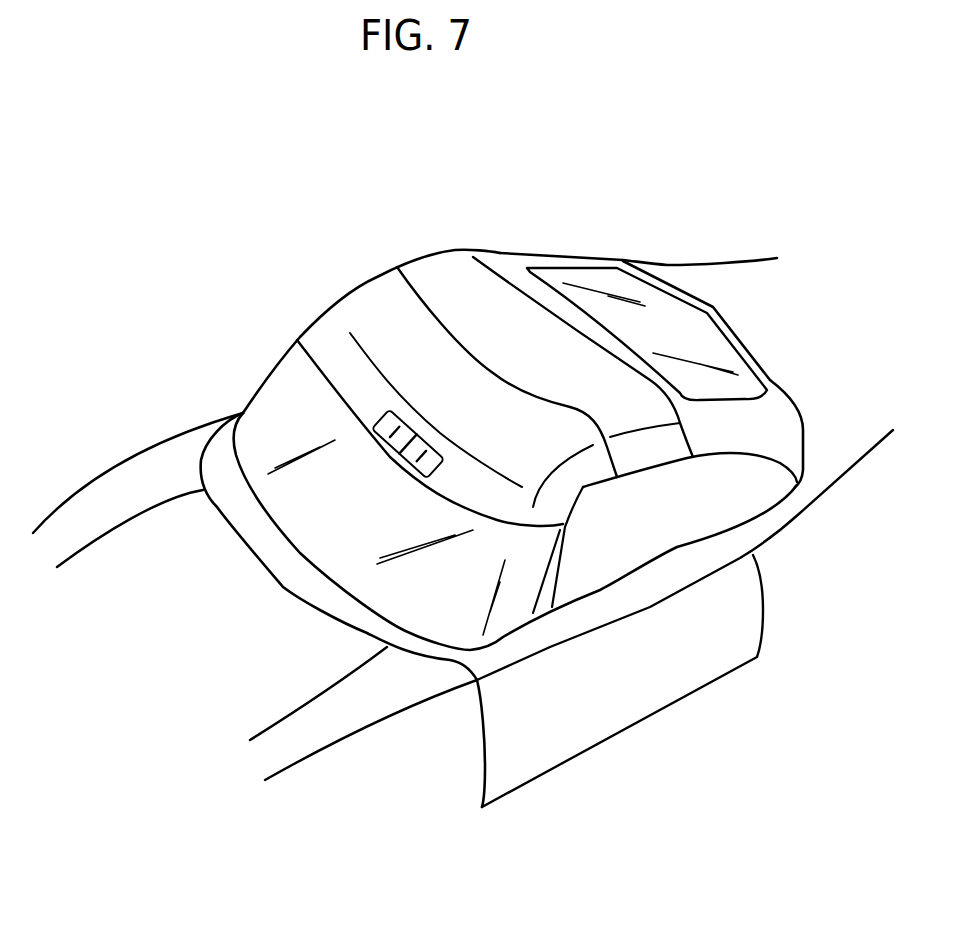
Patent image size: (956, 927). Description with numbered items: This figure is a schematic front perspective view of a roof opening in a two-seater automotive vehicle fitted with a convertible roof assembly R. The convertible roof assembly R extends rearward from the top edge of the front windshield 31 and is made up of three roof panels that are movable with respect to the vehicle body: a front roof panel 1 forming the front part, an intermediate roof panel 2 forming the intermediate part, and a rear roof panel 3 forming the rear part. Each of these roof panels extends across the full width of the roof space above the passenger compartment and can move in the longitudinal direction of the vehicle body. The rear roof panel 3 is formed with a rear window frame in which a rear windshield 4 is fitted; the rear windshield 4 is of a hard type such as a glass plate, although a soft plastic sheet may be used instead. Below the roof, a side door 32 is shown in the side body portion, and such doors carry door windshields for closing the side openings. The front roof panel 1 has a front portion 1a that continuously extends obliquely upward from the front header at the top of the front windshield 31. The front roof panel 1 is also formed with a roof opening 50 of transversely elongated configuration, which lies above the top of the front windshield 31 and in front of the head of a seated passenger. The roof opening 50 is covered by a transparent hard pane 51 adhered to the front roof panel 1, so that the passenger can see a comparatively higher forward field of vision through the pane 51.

The convertible roof assembly R is at (318, 216).
The front roof panel 1 is at (378, 278).
The front portion 1a is at (342, 370).
The intermediate roof panel 2 is at (457, 280).
The rear roof panel 3 is at (523, 268).
The rear windshield 4 is at (677, 337).
The roof opening 50 is at (407, 437).
The transparent hard pane 51 is at (398, 452).
The front windshield 31 is at (363, 548).
The side door 32 is at (625, 691).